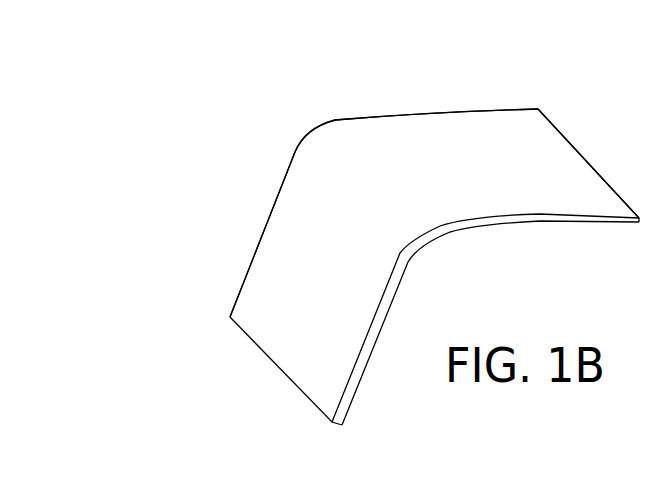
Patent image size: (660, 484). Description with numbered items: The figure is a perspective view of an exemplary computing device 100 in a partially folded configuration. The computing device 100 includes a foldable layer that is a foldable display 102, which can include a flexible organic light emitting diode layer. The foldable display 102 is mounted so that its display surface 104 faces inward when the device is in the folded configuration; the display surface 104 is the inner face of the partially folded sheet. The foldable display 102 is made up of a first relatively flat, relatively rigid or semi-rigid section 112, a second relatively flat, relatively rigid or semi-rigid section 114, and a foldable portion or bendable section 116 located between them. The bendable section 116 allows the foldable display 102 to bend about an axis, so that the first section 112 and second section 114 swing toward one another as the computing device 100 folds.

The computing device 100 is at (228, 193).
The foldable display 102 is at (587, 158).
The display surface 104 is at (498, 205).
The first section 112 is at (435, 102).
The second section 114 is at (245, 252).
The bendable section 116 is at (297, 133).